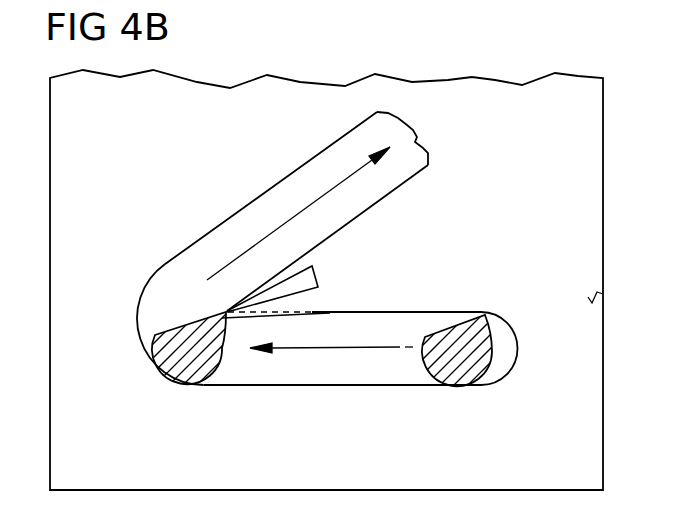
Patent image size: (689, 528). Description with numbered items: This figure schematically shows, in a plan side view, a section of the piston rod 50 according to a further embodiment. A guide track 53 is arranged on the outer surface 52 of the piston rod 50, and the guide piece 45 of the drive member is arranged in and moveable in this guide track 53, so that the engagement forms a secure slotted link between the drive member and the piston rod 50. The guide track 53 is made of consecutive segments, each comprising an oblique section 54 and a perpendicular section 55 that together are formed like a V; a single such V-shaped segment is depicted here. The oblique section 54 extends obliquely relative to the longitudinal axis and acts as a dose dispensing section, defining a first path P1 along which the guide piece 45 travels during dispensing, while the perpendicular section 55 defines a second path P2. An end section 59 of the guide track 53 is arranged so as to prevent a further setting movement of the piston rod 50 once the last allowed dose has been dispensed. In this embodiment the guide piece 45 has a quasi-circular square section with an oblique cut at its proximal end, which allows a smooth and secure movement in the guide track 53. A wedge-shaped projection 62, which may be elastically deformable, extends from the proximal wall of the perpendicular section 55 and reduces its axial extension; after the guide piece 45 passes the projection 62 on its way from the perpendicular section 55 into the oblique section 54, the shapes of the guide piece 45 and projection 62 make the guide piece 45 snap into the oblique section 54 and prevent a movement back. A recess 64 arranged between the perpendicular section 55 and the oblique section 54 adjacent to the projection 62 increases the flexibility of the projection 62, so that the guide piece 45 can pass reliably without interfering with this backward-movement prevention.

The piston rod 50 is at (603, 190).
The outer surface 52 is at (603, 294).
The guide track 53 is at (401, 188).
The oblique section 54 is at (332, 378).
The perpendicular section 55 is at (328, 165).
The end section 59 is at (510, 348).
The wedge-shaped projection 62 is at (231, 320).
The recess 64 is at (317, 277).
The guide piece 45 is at (195, 386).
The first path P1 is at (257, 240).
The second path P2 is at (350, 347).